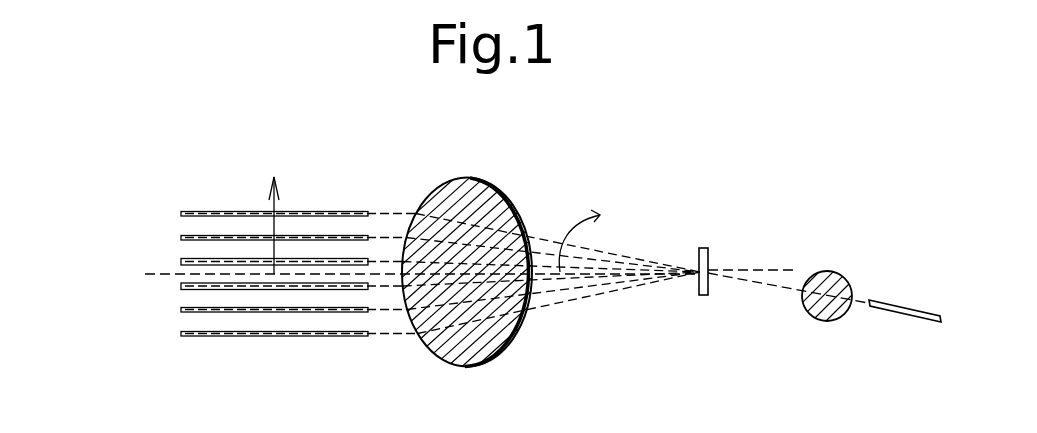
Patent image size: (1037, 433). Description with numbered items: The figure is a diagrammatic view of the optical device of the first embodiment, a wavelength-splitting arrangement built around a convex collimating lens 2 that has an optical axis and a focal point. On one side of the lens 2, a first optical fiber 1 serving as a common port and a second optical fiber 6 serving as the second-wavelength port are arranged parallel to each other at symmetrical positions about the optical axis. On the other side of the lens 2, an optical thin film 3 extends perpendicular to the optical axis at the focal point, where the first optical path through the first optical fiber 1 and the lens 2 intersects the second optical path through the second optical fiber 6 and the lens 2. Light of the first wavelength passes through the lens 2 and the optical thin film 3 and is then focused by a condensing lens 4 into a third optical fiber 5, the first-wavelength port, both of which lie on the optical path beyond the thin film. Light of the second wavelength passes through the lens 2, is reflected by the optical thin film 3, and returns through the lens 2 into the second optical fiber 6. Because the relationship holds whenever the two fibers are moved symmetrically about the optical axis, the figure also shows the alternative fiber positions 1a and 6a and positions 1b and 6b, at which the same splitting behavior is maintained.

The first optical fiber 1 is at (181, 262).
The position of first optical fiber 1a is at (181, 237).
The position of first optical fiber 1b is at (181, 212).
The second optical fiber 6 is at (181, 287).
The position of second optical fiber 6a is at (181, 310).
The position of second optical fiber 6b is at (181, 334).
The collimating lens 2 is at (462, 178).
The optical thin film 3 is at (705, 248).
The condensing lens 4 is at (828, 271).
The third optical fiber 5 is at (942, 311).